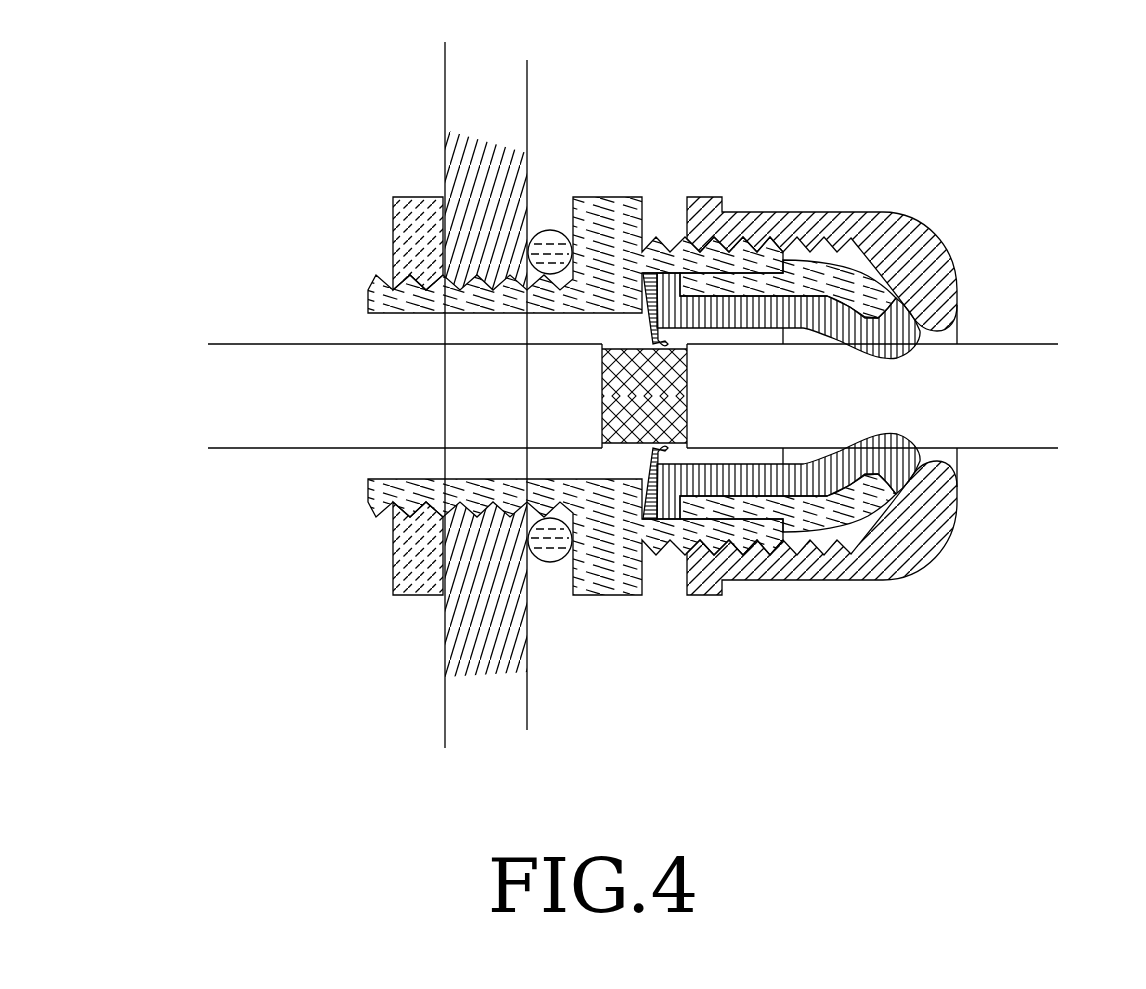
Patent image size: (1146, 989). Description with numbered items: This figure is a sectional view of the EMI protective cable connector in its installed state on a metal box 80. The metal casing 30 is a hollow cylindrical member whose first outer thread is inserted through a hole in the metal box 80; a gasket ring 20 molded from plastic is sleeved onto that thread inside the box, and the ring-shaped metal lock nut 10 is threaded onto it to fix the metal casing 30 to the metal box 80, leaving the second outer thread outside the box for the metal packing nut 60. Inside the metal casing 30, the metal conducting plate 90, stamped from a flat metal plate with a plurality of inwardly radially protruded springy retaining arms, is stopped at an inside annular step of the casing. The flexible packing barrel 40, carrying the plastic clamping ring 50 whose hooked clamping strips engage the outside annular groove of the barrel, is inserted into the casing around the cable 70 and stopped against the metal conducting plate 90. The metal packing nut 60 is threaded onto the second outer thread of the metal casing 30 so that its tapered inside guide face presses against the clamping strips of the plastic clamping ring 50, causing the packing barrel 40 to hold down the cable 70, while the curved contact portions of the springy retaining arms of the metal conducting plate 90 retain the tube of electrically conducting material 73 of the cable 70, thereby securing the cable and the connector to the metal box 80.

The lock nut 10 is at (395, 548).
The gasket ring 20 is at (562, 555).
The metal casing 30 is at (595, 217).
The packing barrel 40 is at (915, 458).
The plastic clamping ring 50 is at (866, 255).
The metal packing nut 60 is at (950, 260).
The cable 70 is at (283, 368).
The tube of electrically conducting material 73 is at (627, 405).
The metal box 80 is at (480, 607).
The metal conducting plate 90 is at (658, 522).